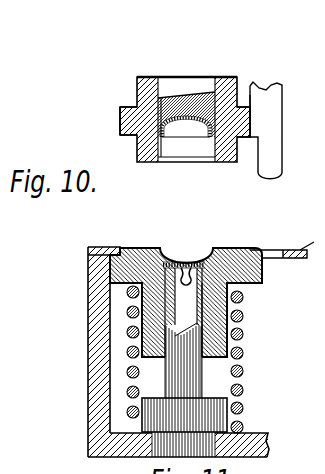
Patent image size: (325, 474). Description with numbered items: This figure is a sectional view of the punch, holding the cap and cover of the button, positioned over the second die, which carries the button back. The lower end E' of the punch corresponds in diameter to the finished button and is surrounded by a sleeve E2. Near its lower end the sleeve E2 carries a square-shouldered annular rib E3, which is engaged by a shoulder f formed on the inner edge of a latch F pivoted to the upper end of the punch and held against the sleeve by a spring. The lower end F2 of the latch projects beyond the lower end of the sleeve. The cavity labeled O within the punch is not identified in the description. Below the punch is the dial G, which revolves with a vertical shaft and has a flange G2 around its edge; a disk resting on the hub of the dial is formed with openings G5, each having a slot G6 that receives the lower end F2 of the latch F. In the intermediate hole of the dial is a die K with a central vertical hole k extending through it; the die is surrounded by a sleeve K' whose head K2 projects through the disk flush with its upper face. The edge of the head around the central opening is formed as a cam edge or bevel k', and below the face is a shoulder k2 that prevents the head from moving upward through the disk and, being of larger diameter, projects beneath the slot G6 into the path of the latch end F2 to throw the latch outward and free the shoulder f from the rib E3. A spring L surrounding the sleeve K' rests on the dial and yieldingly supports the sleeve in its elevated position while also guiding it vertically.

In FIG. 10, the lower end of punch E' is at (186, 94).
In FIG. 10, the sleeve E2 is at (237, 80).
In FIG. 10, the square-shouldered annular rib E3 is at (120, 124).
In FIG. 10, the port opening O is at (187, 121).
In FIG. 10, the latch F is at (282, 97).
In FIG. 10, the shoulder f is at (258, 108).
In FIG. 10, the lower end of latch F2 is at (282, 172).
In FIG. 11, the dial G is at (250, 436).
In FIG. 11, the flange G2 is at (185, 352).
In FIG. 11, the openings G5 is at (119, 248).
In FIG. 11, the slot G6 is at (279, 250).
In FIG. 11, the die K is at (215, 390).
In FIG. 11, the sleeve K' is at (236, 320).
In FIG. 11, the head K2 is at (220, 248).
In FIG. 11, the vertical hole k is at (217, 312).
In FIG. 11, the cam edge or bevel k' is at (182, 253).
In FIG. 11, the shoulder k2 is at (263, 264).
In FIG. 11, the spring L is at (243, 355).